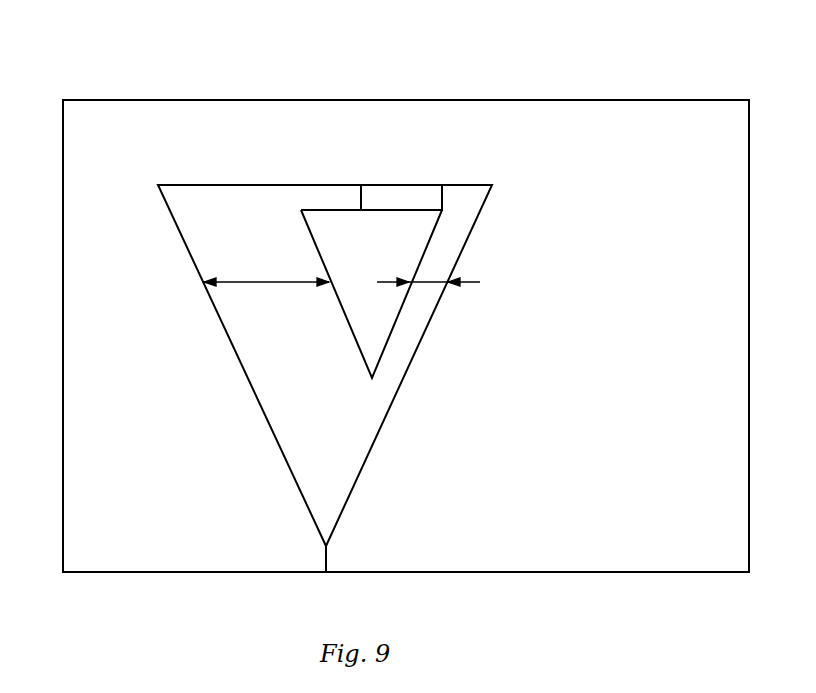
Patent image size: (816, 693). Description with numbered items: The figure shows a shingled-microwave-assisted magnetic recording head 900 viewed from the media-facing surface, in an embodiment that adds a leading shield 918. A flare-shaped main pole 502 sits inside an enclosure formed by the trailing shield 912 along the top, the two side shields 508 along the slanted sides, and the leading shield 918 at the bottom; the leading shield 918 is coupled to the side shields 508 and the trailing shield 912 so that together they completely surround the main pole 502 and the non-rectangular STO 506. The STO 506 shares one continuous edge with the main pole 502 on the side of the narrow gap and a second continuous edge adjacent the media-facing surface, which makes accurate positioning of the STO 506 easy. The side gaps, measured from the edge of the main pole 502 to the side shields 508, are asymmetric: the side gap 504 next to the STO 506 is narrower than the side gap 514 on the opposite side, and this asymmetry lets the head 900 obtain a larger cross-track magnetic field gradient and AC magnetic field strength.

The MAMR-SMR head 900 is at (160, 33).
The trailing shield 912 is at (95, 110).
The side shields 508 is at (253, 396).
The leading shield 918 is at (212, 565).
The flare-shaped main pole 502 is at (357, 318).
The STO 506 is at (398, 197).
The side gap 514 is at (262, 280).
The side gap 504 is at (432, 283).